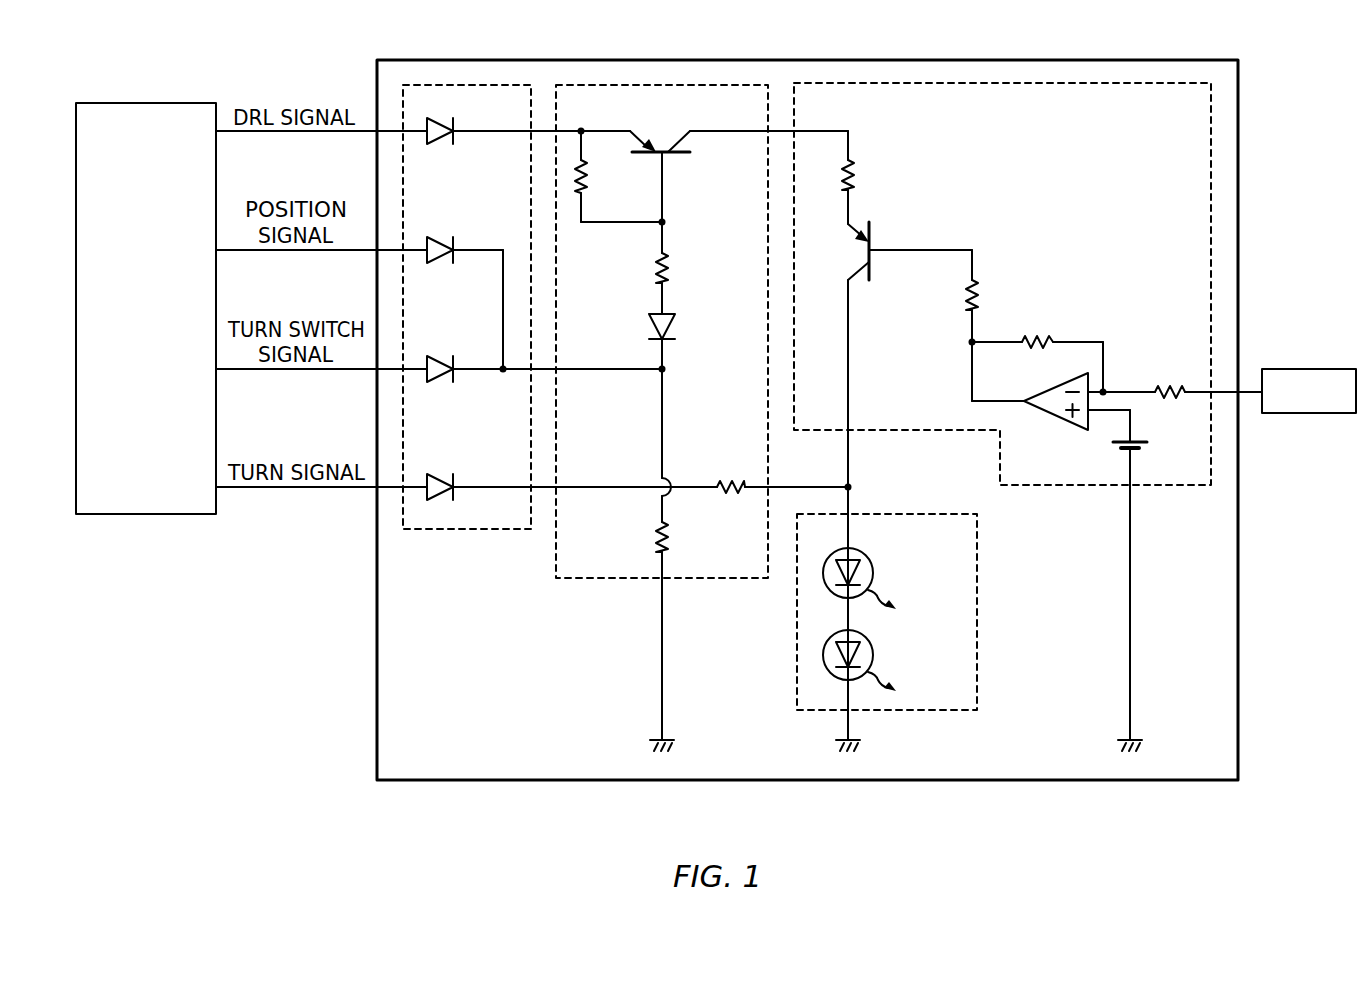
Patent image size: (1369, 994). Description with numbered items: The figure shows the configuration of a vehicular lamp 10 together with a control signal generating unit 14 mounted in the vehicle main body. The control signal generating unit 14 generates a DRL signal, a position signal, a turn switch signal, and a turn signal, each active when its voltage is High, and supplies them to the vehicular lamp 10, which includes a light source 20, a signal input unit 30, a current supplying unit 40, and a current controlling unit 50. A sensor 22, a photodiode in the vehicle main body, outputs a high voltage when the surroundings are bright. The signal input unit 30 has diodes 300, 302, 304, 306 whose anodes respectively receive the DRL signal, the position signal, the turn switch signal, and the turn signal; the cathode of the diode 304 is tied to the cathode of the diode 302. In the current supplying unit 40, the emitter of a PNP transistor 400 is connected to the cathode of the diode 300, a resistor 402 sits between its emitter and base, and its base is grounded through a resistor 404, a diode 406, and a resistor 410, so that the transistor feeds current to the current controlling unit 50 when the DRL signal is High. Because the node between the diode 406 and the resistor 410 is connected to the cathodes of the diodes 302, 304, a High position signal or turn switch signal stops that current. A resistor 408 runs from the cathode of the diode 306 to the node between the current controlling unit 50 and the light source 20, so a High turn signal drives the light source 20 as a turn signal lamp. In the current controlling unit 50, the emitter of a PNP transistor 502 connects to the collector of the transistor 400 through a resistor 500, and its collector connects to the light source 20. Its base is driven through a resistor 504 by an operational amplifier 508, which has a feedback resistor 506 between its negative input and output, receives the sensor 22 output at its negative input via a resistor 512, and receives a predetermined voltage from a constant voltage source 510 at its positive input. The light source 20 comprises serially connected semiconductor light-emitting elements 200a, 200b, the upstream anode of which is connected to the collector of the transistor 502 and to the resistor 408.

The vehicular lamp 10 is at (1241, 85).
The control signal generating unit 14 is at (145, 102).
The sensor 22 is at (1310, 368).
The signal input unit 30 is at (467, 530).
The diode 300 is at (445, 146).
The diode 302 is at (442, 237).
The diode 304 is at (443, 383).
The diode 306 is at (442, 473).
The current supplying unit 40 is at (718, 580).
The PNP transistor 400 is at (690, 140).
The resistor 402 is at (589, 178).
The resistor 404 is at (676, 268).
The diode 406 is at (678, 322).
The resistor 408 is at (733, 478).
The resistor 410 is at (672, 537).
The current controlling unit 50 is at (1165, 485).
The resistor 500 is at (858, 177).
The PNP transistor 502 is at (875, 235).
The resistor 504 is at (966, 297).
The resistor 506 is at (1043, 334).
The operational amplifier 508 is at (1058, 424).
The constant voltage source 510 is at (1147, 447).
The resistor 512 is at (1172, 381).
The light source 20 is at (978, 613).
The semiconductor light-emitting element 200a is at (876, 573).
The semiconductor light-emitting element 200b is at (876, 655).